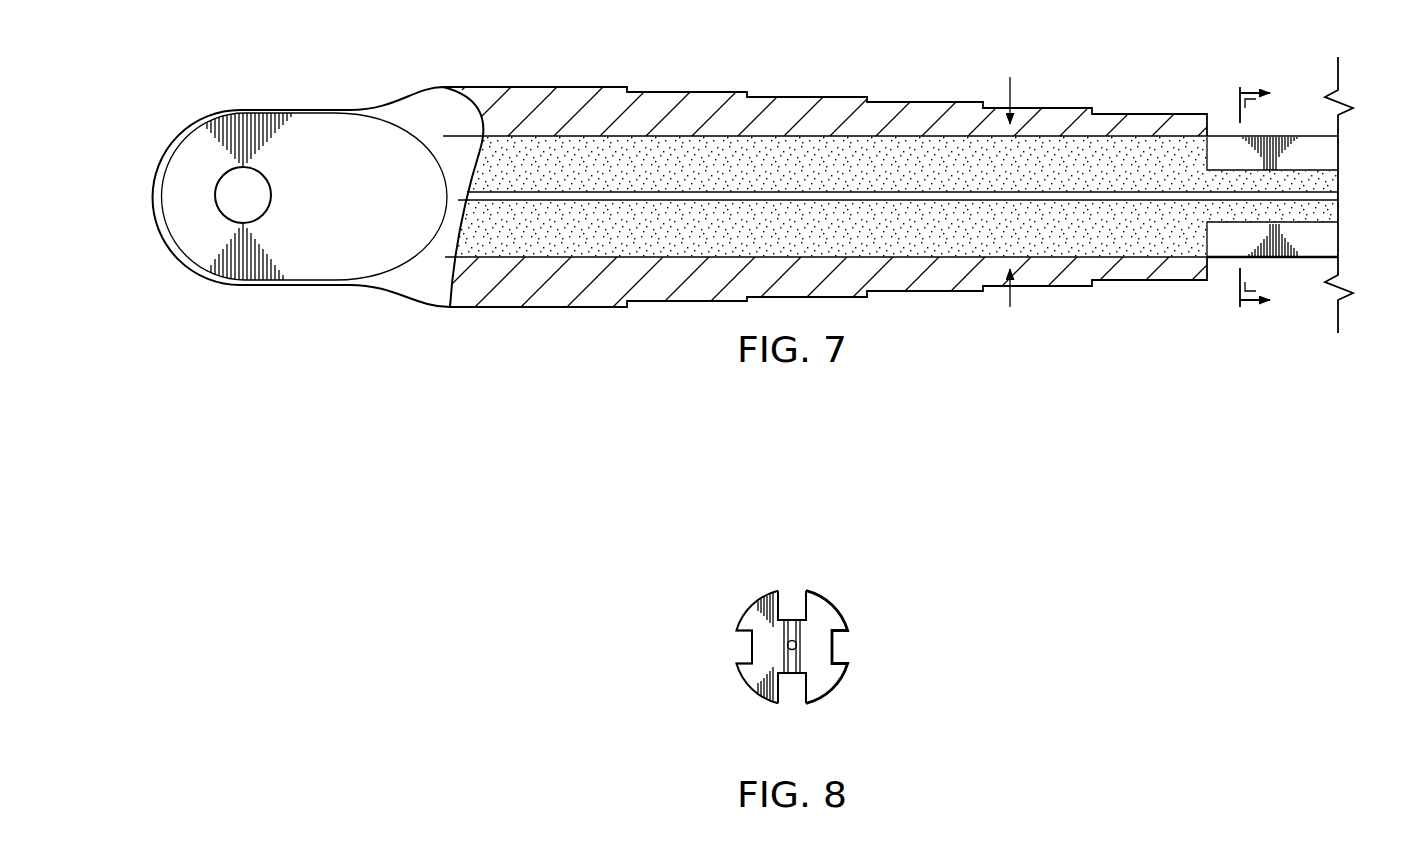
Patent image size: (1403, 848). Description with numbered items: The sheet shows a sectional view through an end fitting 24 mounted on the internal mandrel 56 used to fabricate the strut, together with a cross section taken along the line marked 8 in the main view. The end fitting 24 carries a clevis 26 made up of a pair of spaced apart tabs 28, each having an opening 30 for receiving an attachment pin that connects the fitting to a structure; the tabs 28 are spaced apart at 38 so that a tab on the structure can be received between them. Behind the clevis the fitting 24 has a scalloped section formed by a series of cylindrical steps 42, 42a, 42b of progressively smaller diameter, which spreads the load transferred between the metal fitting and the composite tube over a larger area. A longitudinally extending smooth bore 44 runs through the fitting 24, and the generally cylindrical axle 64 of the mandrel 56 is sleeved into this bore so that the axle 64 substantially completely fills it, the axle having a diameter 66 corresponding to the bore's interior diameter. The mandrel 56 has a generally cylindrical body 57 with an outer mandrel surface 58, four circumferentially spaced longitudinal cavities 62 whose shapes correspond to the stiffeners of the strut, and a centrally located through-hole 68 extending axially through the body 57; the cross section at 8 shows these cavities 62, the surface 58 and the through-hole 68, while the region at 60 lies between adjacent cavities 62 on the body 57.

In FIG. 7, the end fitting 24 is at (921, 186).
In FIG. 7, the clevis 26 is at (256, 290).
In FIG. 7, the tab 28 is at (226, 111).
In FIG. 7, the opening 30 is at (272, 196).
In FIG. 7, the spacing between tabs 38 is at (156, 214).
In FIG. 7, the cylindrical step 42 is at (806, 96).
In FIG. 7, the cylindrical step 42a is at (1116, 102).
In FIG. 7, the cylindrical step 42b is at (677, 72).
In FIG. 7, the bore 44 is at (506, 266).
In FIG. 8, the internal mandrel 56 is at (784, 646).
In FIG. 8, the mandrel body 57 is at (843, 596).
In FIG. 8, the outer mandrel surface 58 is at (747, 693).
In FIG. 8, the side notch 60 is at (739, 662).
In FIG. 7, the longitudinal cavity 62 is at (1330, 152).
In FIG. 8, the longitudinal cavity 62 is at (803, 588).
In FIG. 7, the axle 64 is at (873, 172).
In FIG. 7, the axle diameter 66 is at (1010, 300).
In FIG. 7, the through-hole 68 is at (1335, 197).
In FIG. 8, the through-hole 68 is at (797, 648).
In FIG. 7, the section line 8- 8 is at (1271, 199).